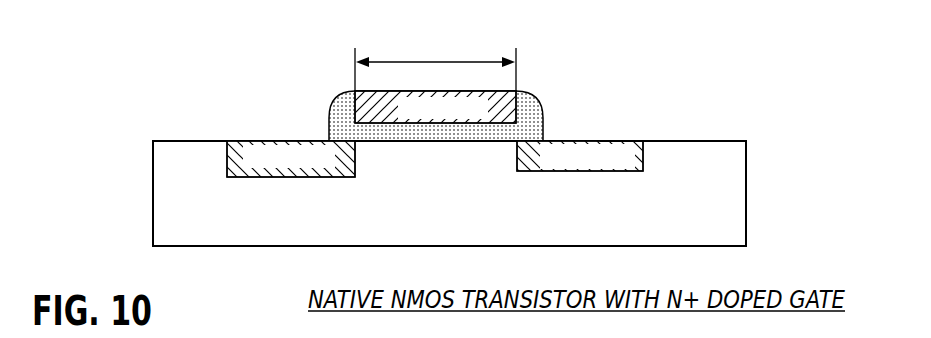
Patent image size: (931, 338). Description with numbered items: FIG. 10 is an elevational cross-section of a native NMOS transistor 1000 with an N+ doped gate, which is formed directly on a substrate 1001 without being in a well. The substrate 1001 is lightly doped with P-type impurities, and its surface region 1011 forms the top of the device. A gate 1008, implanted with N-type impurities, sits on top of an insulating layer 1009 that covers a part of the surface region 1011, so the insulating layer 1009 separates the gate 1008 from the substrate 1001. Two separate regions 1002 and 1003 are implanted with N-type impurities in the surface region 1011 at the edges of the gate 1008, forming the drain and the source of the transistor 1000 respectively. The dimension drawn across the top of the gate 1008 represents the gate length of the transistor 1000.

The native NMOS transistor 1000 is at (230, 68).
The substrate 1001 is at (462, 234).
The drain region 1002 is at (302, 167).
The source region 1003 is at (598, 168).
The gate 1008 is at (445, 119).
The insulating layer 1009 is at (543, 122).
The surface region 1011 is at (688, 141).